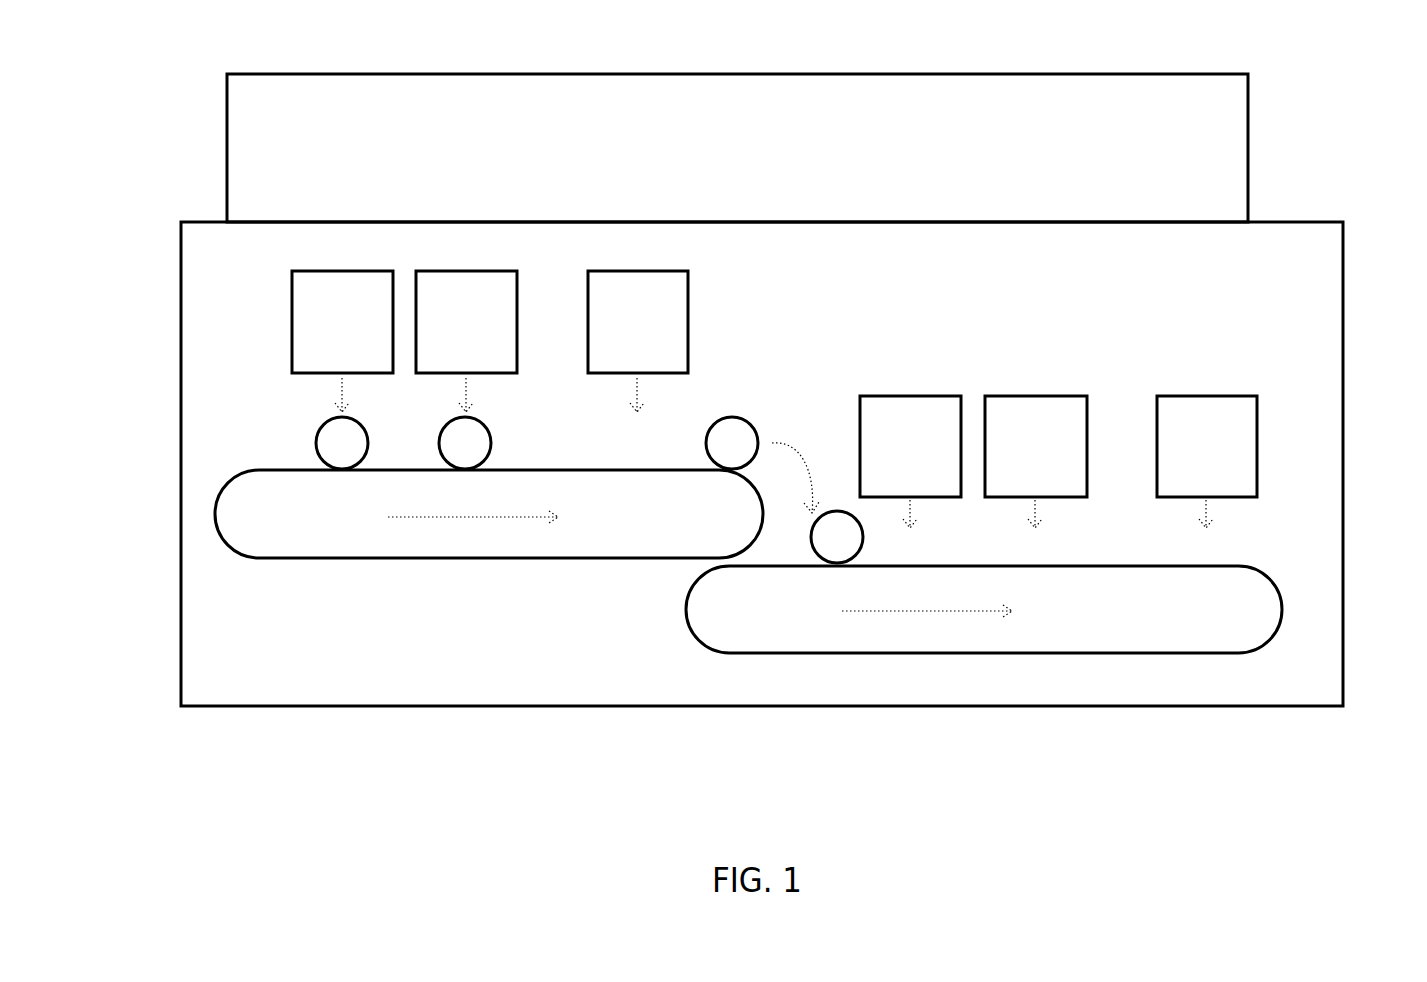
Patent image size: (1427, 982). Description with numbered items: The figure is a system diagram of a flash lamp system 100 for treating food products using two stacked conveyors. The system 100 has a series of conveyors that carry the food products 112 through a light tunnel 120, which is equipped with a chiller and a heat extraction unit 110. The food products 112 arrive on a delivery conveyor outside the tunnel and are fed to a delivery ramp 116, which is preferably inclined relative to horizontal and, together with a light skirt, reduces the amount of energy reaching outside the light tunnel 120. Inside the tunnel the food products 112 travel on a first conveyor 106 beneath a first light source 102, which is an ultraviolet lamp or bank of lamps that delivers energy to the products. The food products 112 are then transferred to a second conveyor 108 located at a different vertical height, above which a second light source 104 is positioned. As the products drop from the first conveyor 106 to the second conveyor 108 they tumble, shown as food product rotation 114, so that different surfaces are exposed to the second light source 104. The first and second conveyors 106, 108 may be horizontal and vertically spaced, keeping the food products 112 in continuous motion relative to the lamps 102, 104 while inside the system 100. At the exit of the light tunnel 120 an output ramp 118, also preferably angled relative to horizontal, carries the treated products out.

The flash lamp system 100 is at (1309, 124).
The first light source 102 is at (457, 339).
The second light source 104 is at (1058, 428).
The first conveyor 106 is at (489, 514).
The second conveyor 108 is at (984, 609).
The heat extraction unit 110 is at (737, 148).
The food products 112 is at (503, 436).
The food product rotation 114 is at (817, 484).
The delivery ramp 116 is at (255, 460).
The output ramp 118 is at (1280, 648).
The light tunnel 120 is at (762, 464).